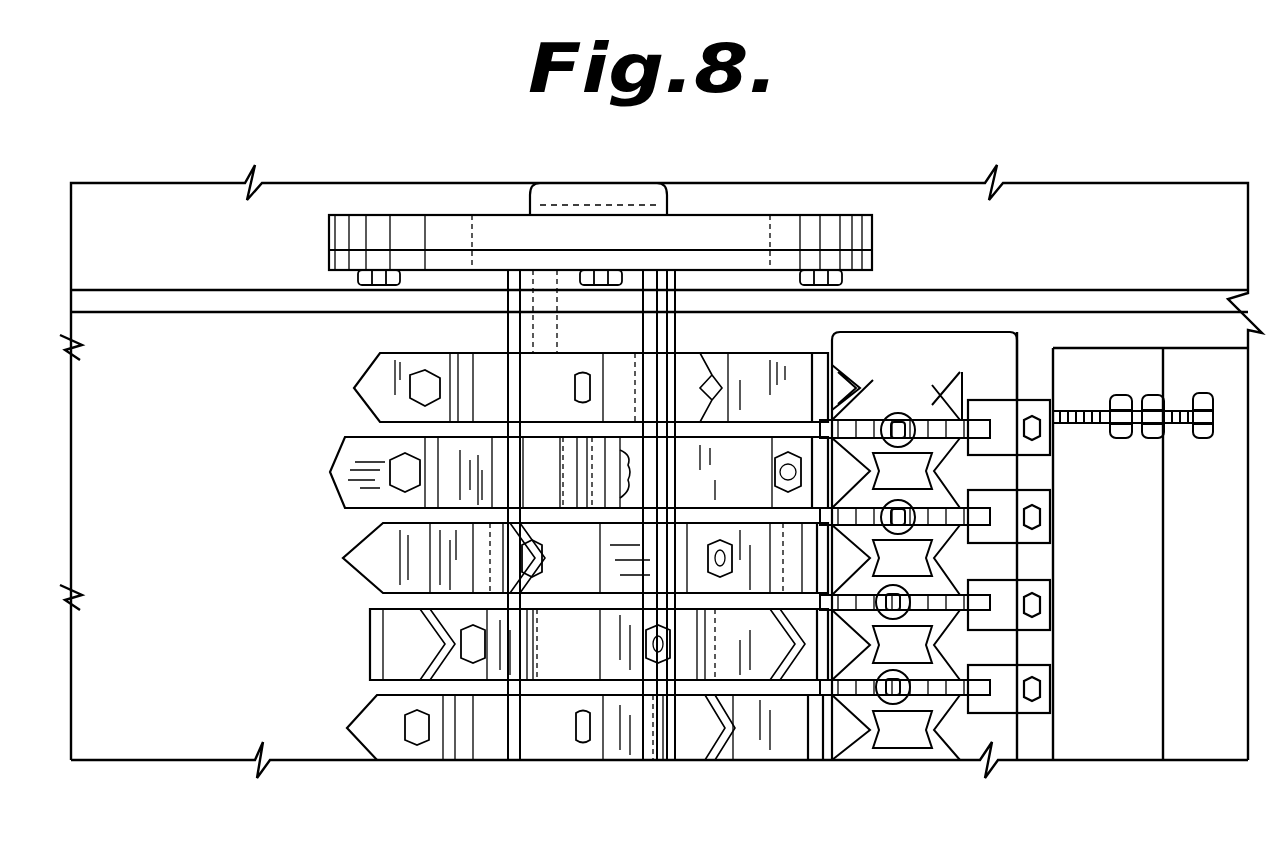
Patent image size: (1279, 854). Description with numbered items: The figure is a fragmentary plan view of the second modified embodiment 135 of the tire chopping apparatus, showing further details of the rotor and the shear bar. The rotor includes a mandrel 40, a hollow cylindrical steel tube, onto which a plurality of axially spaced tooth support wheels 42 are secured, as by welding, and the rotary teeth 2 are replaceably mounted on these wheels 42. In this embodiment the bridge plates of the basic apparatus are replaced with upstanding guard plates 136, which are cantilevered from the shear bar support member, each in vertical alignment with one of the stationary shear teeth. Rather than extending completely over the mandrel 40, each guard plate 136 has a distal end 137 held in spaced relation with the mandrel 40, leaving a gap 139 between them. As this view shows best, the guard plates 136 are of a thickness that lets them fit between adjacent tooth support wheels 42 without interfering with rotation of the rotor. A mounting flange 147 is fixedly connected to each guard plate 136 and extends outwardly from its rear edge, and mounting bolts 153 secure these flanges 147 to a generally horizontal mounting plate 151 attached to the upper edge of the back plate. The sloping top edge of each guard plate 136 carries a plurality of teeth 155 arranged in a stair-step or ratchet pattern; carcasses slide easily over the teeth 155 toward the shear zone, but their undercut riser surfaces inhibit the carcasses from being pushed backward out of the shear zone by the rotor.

The rotary teeth 2 is at (370, 372).
The mandrel 40 is at (672, 328).
The tooth support wheels 42 is at (370, 652).
The second modified embodiment 135 is at (627, 777).
The guard plates 136 is at (940, 400).
The distal end 137 is at (712, 437).
The gap 139 is at (672, 515).
The mounting flange 147 is at (1053, 520).
The mounting plate 151 is at (1053, 652).
The mounting bolts 153 is at (1053, 432).
The teeth 155 is at (878, 412).